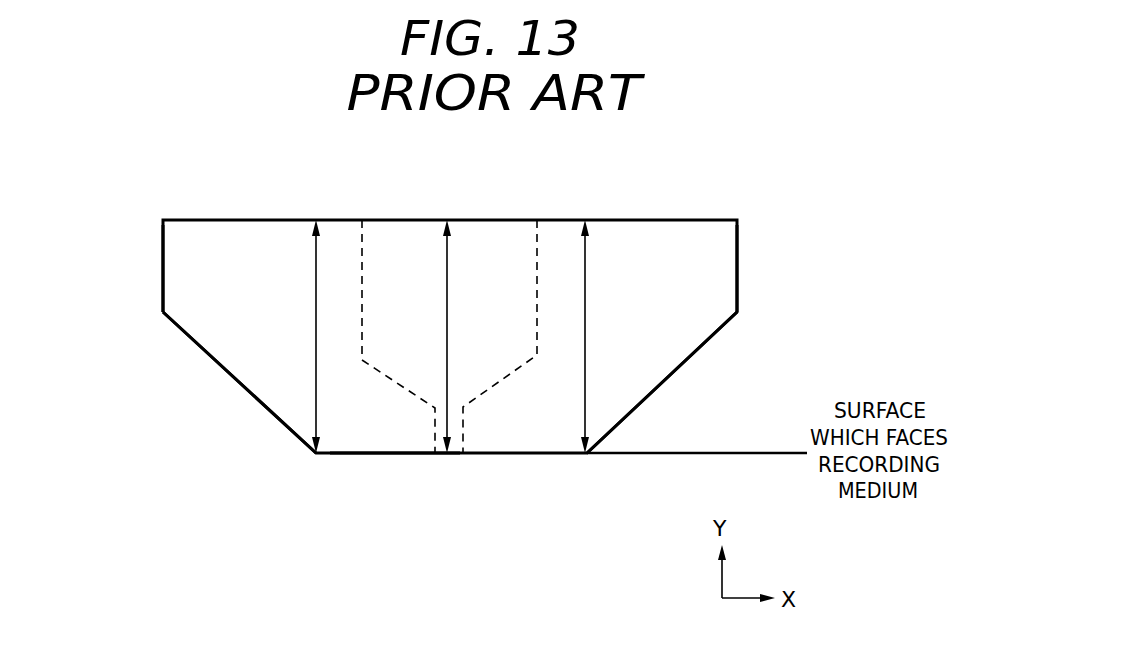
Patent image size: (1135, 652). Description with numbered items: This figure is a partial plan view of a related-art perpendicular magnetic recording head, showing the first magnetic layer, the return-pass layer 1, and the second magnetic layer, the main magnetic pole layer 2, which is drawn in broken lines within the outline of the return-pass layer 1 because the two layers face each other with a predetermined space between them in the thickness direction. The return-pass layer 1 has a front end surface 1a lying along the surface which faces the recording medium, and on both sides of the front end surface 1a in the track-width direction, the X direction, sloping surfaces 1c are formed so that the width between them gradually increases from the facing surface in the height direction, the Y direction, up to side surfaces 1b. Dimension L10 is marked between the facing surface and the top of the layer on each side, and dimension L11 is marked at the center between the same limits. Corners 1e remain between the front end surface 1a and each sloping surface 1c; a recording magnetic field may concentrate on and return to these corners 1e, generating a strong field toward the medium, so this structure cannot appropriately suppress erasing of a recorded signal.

The return-pass layer 1 is at (562, 436).
The front end surface 1a is at (393, 455).
The side surface 1b is at (158, 311).
The sloping surface 1c is at (212, 362).
The corner 1e is at (316, 458).
The main magnetic pole layer 2 is at (498, 230).
The thickness dimension L10 is at (315, 376).
The depth dimension L11 is at (420, 388).